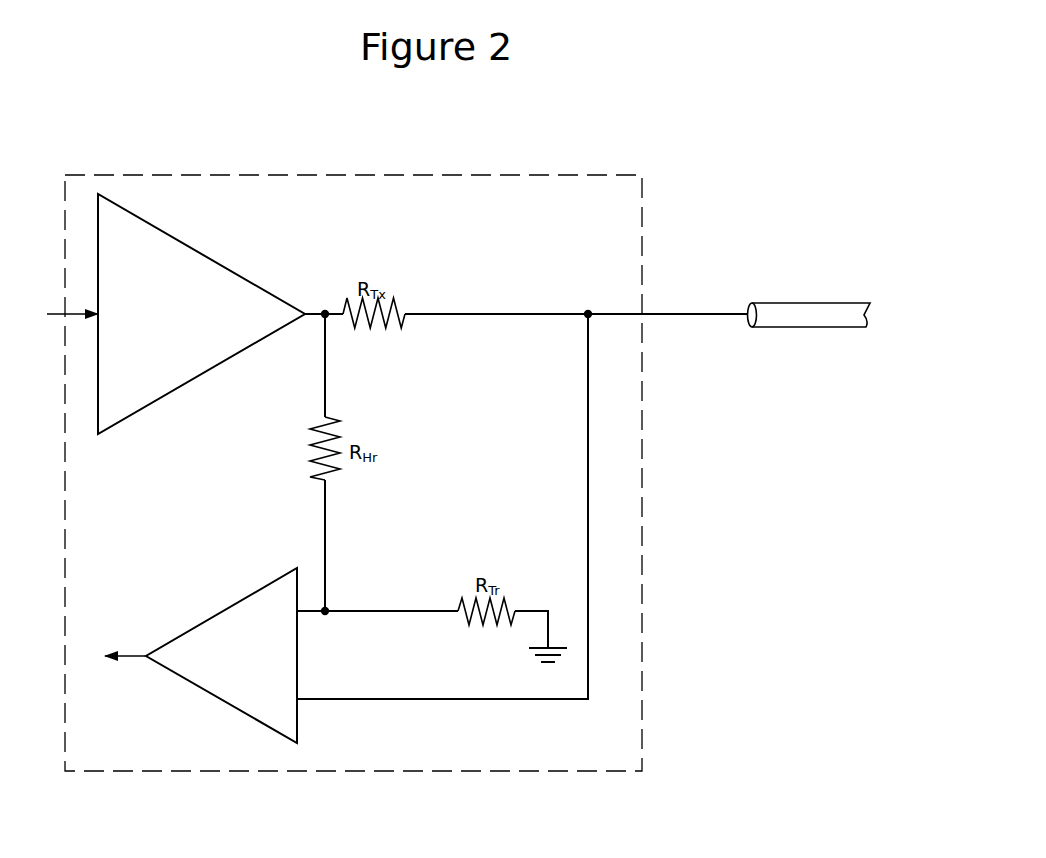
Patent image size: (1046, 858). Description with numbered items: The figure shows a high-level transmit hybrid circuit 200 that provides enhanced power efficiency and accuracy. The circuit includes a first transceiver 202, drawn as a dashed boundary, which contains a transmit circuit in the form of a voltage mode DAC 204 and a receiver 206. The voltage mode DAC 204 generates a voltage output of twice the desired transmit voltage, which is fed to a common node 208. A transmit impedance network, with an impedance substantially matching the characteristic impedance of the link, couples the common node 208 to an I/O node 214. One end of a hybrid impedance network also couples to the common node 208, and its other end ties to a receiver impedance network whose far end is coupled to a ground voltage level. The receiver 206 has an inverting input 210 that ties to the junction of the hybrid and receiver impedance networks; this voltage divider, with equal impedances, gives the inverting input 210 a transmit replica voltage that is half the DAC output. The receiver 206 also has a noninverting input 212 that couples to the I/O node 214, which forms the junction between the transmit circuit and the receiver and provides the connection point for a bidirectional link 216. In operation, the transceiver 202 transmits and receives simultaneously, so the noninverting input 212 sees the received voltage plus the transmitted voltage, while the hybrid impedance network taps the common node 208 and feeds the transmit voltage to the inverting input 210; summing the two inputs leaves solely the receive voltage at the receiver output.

The transmit hybrid circuit 200 is at (700, 122).
The first transceiver 202 is at (645, 740).
The voltage mode DAC 204 is at (176, 314).
The receiver 206 is at (201, 655).
The common node 208 is at (318, 318).
The inverting input 210 is at (300, 614).
The noninverting input 212 is at (298, 697).
The I/O node 214 is at (583, 316).
The bidirectional link 216 is at (679, 315).